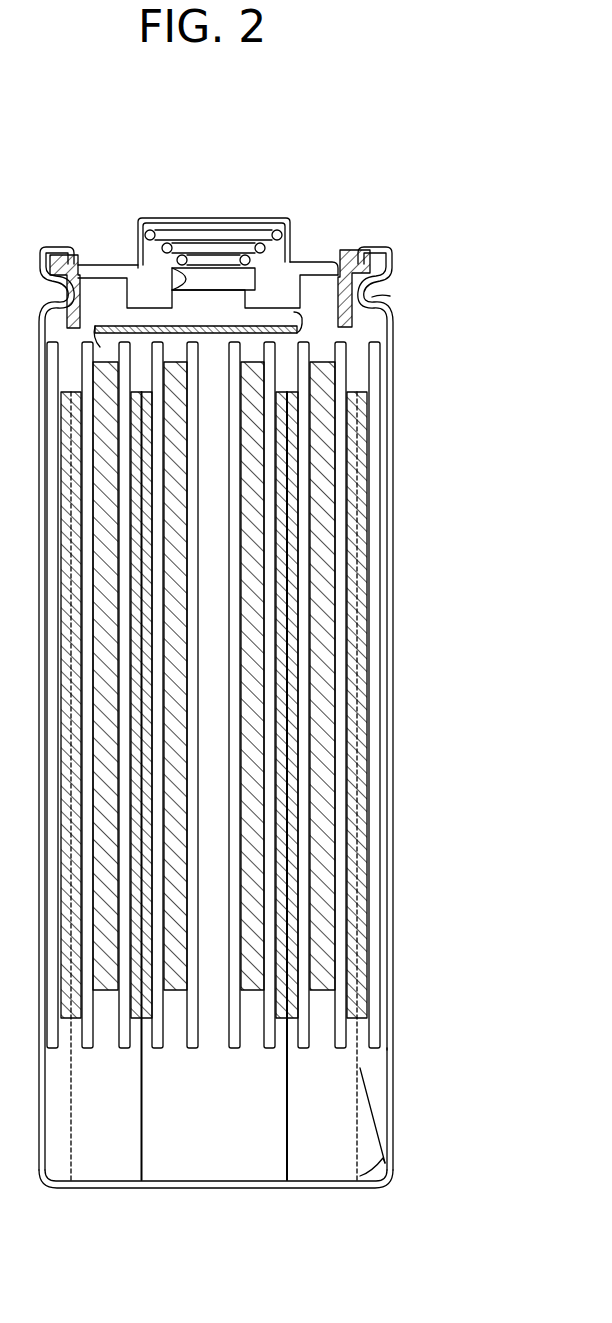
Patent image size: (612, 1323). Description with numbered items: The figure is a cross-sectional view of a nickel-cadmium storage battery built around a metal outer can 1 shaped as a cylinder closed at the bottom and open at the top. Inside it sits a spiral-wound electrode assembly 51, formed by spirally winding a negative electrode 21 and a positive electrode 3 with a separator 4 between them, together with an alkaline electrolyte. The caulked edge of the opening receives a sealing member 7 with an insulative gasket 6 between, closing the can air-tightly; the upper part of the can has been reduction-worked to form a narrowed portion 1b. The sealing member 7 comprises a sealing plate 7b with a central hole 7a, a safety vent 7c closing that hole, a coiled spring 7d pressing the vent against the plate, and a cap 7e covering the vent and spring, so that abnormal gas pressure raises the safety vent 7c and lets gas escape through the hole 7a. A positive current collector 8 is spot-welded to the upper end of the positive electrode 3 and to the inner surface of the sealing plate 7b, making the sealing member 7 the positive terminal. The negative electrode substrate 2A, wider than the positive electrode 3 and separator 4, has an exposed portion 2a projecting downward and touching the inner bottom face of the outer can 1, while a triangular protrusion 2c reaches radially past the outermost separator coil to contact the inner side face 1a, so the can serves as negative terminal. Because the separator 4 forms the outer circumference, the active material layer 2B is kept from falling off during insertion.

The outer can 1 is at (393, 740).
The inner side face 1a is at (377, 1080).
The narrowed portion 1b is at (392, 299).
The negative electrode 21 is at (293, 786).
The negative electrode substrate 2A is at (477, 440).
The active material layer 2B is at (360, 473).
The exposed portion 2a is at (382, 1143).
The protrusion 2c is at (365, 1127).
The positive electrode 3 is at (330, 628).
The separator 4 is at (340, 352).
The spiral-wound electrode assembly 51 is at (226, 1078).
The insulative gasket 6 is at (386, 268).
The sealing member 7 is at (202, 204).
The hole 7a is at (172, 270).
The sealing plate 7b is at (340, 258).
The safety vent 7c is at (215, 276).
The coiled spring 7d is at (185, 233).
The cap 7e is at (226, 210).
The positive current collector 8 is at (302, 328).